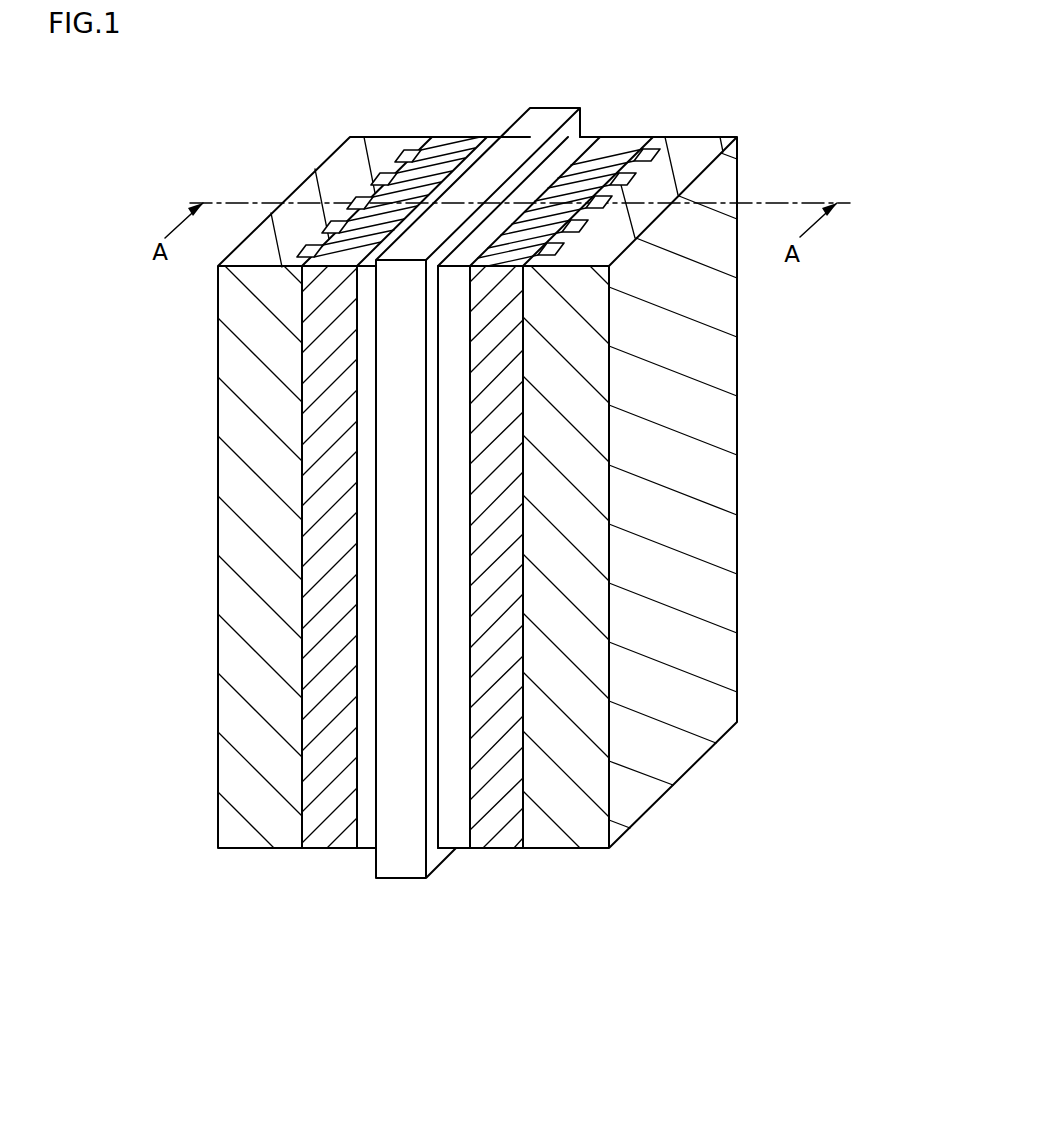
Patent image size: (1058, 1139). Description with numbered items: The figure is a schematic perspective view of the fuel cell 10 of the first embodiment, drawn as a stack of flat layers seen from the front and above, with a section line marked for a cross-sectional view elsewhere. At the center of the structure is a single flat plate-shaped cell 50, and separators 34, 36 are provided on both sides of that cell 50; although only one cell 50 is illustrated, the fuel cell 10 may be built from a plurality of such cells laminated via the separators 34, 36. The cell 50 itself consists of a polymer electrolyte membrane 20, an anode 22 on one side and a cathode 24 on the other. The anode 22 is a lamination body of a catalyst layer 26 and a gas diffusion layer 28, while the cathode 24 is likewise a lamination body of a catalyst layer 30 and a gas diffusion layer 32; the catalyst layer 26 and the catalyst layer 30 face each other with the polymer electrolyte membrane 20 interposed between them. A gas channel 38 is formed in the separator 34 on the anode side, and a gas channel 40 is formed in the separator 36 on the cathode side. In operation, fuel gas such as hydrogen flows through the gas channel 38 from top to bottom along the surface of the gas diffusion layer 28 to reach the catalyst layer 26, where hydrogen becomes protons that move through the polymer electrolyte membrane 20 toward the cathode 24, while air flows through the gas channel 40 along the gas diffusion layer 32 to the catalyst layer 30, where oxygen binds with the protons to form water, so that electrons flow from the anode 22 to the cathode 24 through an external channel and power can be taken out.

The fuel cell 10 is at (477, 578).
The polymer electrolyte membrane 20 is at (410, 878).
The anode 22 is at (394, 554).
The cathode 24 is at (545, 554).
The catalyst layer 26 is at (361, 598).
The gas diffusion layer 28 is at (303, 850).
The catalyst layer 30 is at (465, 850).
The gas diffusion layer 32 is at (561, 527).
The separator 34 is at (262, 850).
The separator 36 is at (567, 850).
The gas channel 38 is at (387, 165).
The gas channel 40 is at (633, 177).
The cell 50 is at (477, 563).